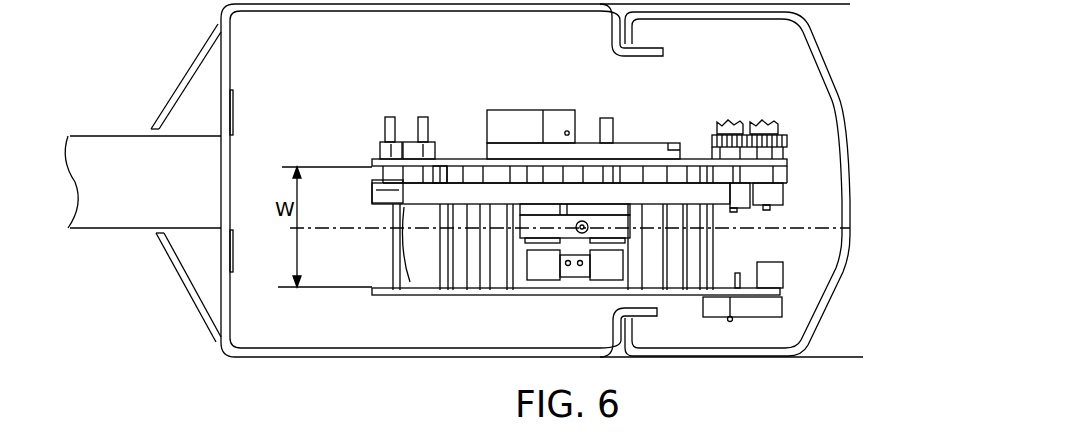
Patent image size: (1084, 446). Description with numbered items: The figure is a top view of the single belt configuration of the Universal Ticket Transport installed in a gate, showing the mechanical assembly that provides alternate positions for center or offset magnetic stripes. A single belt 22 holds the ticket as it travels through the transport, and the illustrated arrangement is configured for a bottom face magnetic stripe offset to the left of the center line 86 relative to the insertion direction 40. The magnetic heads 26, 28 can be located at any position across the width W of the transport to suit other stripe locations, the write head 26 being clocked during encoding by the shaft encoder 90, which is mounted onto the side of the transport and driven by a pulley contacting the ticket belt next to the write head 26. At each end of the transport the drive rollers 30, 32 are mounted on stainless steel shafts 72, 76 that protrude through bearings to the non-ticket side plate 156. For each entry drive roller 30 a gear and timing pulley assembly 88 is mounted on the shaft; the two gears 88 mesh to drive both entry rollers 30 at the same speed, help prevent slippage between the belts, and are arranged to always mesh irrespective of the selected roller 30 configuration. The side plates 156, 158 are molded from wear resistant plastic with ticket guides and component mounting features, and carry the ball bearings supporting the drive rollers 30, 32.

The belt 22 is at (623, 190).
The magnetic write head 26 is at (597, 280).
The magnetic head 28 is at (530, 280).
The entry drive roller 30 is at (780, 177).
The drive roller 32 is at (382, 192).
The insertion direction 40 is at (862, 228).
The shaft 72 is at (392, 115).
The shaft 76 is at (425, 115).
The center line 86 is at (267, 230).
The gear and timing pulley assembly 88 is at (762, 122).
The shaft encoder 90 is at (520, 116).
The side plate 156 is at (370, 158).
The side plate 158 is at (372, 295).